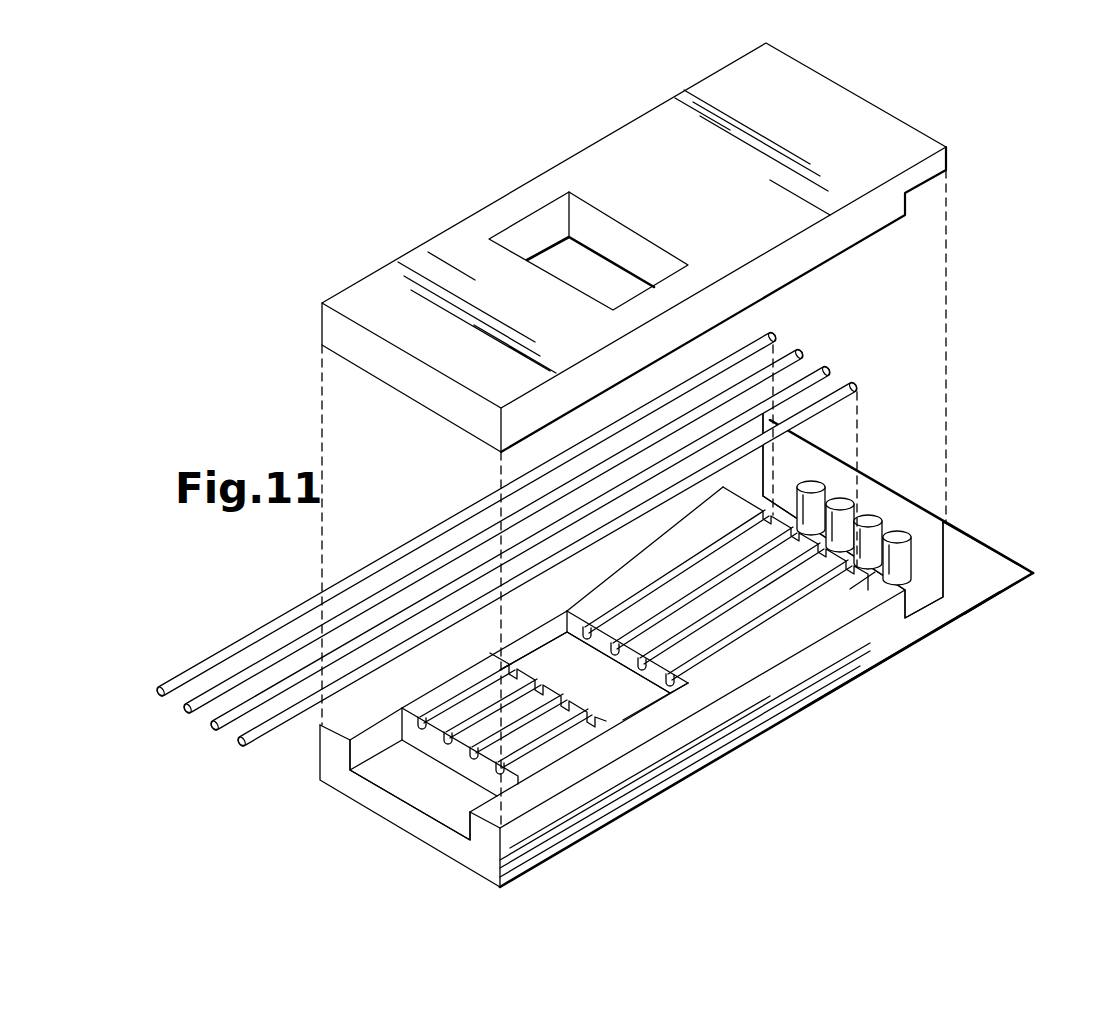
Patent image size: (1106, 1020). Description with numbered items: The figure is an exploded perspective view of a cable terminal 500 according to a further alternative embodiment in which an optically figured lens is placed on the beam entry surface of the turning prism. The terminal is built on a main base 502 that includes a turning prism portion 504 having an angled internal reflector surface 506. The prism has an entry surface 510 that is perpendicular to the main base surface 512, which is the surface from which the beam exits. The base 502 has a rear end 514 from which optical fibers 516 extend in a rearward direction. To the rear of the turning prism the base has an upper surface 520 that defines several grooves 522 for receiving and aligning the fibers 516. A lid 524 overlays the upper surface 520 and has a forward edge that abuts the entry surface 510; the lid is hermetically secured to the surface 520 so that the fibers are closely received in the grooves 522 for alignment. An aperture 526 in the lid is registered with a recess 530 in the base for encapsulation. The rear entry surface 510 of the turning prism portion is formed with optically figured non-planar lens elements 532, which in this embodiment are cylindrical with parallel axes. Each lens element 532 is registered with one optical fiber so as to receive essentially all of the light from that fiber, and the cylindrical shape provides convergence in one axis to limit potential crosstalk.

The cable terminal 500 is at (384, 131).
The main base 502 is at (788, 721).
The turning prism portion 504 is at (987, 583).
The angled internal reflector surface 506 is at (1012, 550).
The entry surface 510 is at (920, 520).
The main base surface 512 is at (877, 670).
The rear end 514 is at (410, 822).
The optical fibers 516 is at (207, 732).
The upper surface 520 is at (653, 723).
The grooves 522 is at (709, 580).
The lid 524 is at (626, 117).
The aperture 526 is at (535, 228).
The recess 530 is at (606, 692).
The optically figured non-planar lens elements 532 is at (812, 487).